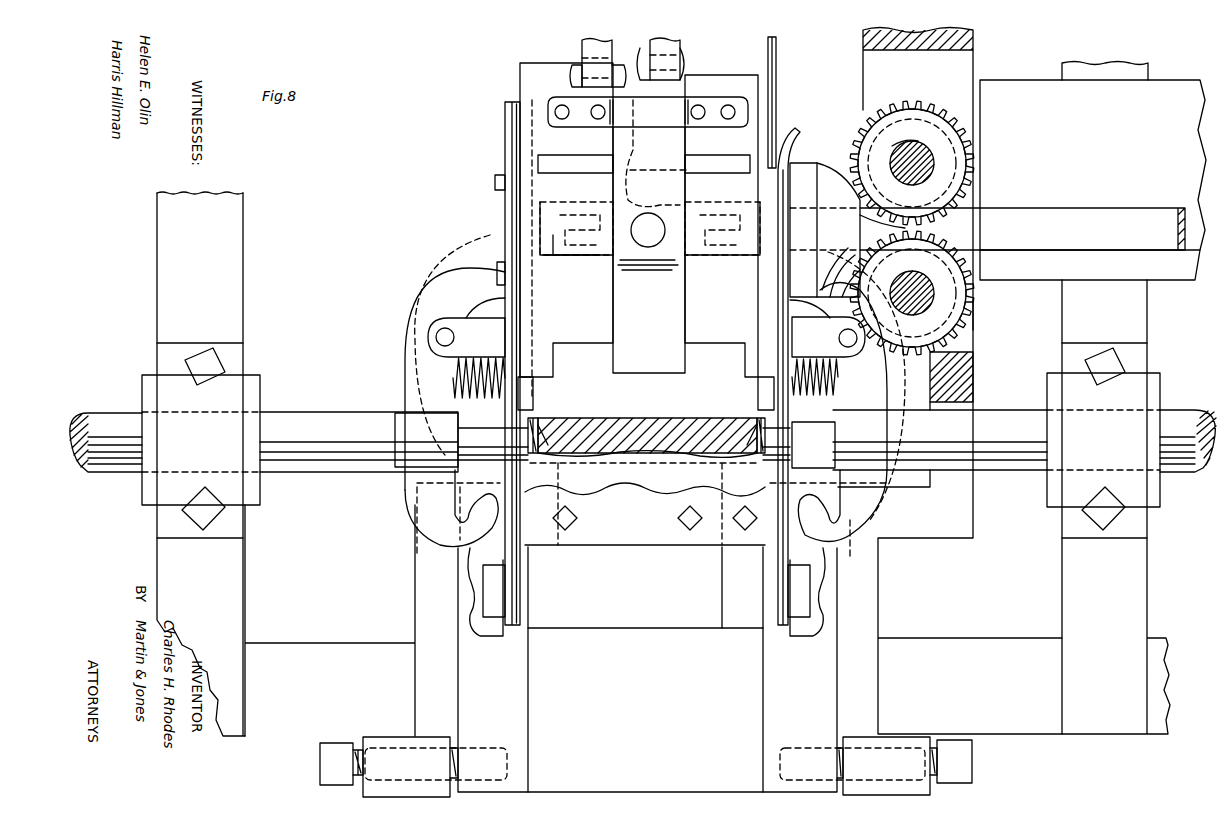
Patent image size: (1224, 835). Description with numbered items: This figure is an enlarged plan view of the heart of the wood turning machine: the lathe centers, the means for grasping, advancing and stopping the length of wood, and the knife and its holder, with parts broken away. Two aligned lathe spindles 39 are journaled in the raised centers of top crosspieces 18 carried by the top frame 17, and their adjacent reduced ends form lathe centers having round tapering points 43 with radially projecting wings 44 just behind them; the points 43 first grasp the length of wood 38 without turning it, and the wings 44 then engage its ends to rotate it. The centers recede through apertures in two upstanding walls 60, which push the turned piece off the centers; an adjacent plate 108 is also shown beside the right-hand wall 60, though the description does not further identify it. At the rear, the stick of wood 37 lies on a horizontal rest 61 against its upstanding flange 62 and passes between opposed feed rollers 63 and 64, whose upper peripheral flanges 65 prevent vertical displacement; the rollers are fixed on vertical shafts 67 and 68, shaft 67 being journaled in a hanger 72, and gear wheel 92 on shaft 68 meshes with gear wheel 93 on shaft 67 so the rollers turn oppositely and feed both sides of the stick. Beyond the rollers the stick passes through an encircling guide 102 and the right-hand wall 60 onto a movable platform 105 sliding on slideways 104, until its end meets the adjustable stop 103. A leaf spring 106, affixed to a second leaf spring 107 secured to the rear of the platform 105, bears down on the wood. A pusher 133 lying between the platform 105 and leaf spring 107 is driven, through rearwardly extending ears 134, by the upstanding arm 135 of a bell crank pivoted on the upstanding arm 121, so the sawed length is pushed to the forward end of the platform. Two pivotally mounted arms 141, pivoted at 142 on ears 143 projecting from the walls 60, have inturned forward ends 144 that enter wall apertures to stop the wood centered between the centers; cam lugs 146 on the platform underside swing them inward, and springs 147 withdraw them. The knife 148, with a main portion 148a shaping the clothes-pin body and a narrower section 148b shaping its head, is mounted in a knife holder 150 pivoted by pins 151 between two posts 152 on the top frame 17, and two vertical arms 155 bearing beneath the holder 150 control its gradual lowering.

The top frame 17 is at (653, 393).
The top crosspiece 18 is at (663, 464).
The stick of wood 37 is at (1012, 215).
The length of wood 38 is at (661, 427).
The lathe spindle 39 is at (643, 441).
The pointed end 43 is at (575, 435).
The wing 44 is at (545, 428).
The upstanding wall 60 is at (505, 113).
The horizontal rest 61 is at (1093, 156).
The upstanding flange 62 is at (1090, 265).
The feed roller 63 is at (912, 293).
The feed roller 64 is at (913, 155).
The upper peripheral flange 65 is at (925, 220).
The vertical shaft 67 is at (908, 274).
The vertical shaft 68 is at (903, 135).
The hanger 72 is at (936, 215).
The gear wheel 92 is at (895, 118).
The gear wheel 93 is at (975, 328).
The encircling guide 102 is at (800, 160).
The adjustable stop 103 is at (500, 198).
The slideway 104 is at (533, 390).
The movable platform 105 is at (639, 231).
The leaf spring 106 is at (588, 255).
The leaf spring 107 is at (651, 236).
The plate 108 is at (778, 98).
The upstanding arm 121 is at (582, 47).
The pusher 133 is at (644, 164).
The ear 134 is at (680, 75).
The upstanding arm 135 is at (680, 57).
The pivotally mounted arm 141 is at (405, 385).
The pivot 142 is at (428, 336).
The ear 143 is at (646, 337).
The forward end 144 is at (470, 500).
The cam lug 146 is at (548, 192).
The spring 147 is at (455, 383).
The knife 148 is at (733, 620).
The main portion 148a is at (645, 529).
The narrower section 148b is at (740, 518).
The knife holder 150 is at (647, 649).
The pin 151 is at (320, 770).
The post 152 is at (646, 767).
The vertical arm 155 is at (500, 585).